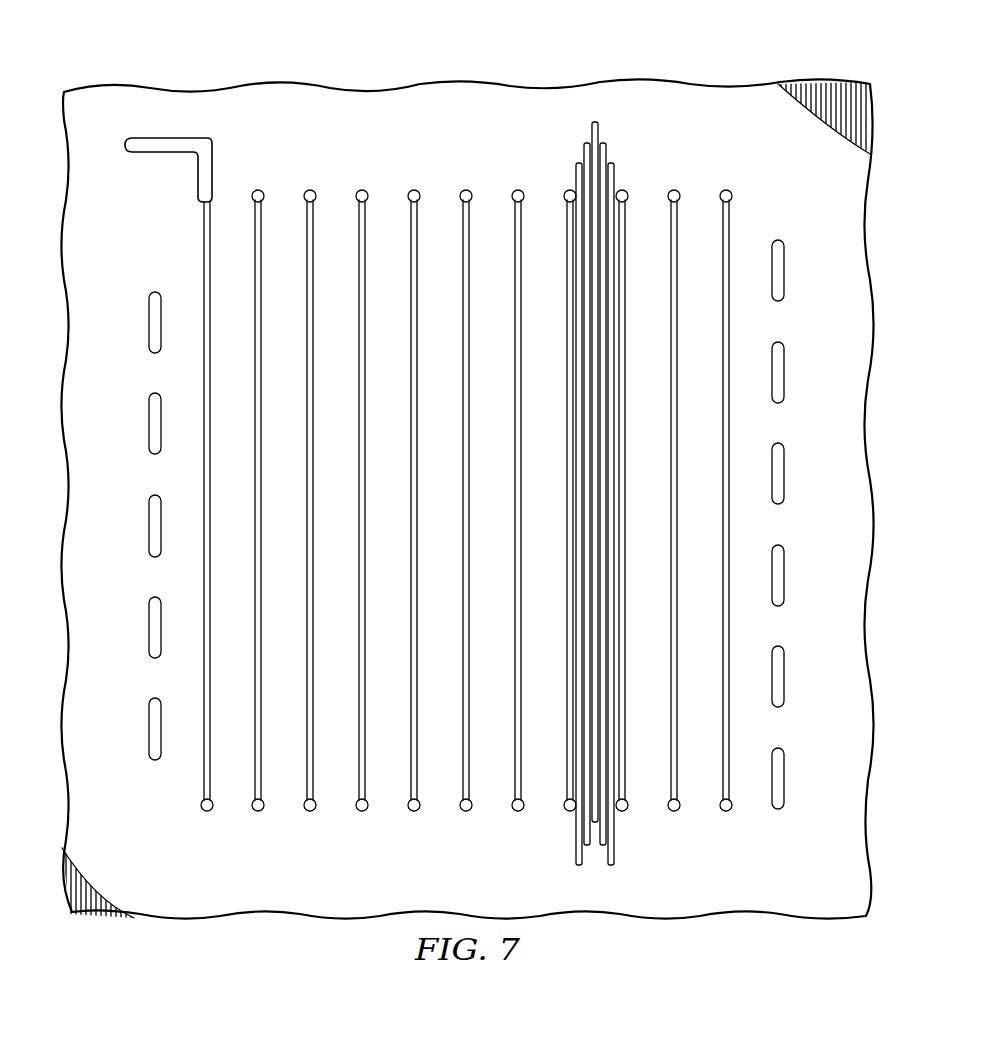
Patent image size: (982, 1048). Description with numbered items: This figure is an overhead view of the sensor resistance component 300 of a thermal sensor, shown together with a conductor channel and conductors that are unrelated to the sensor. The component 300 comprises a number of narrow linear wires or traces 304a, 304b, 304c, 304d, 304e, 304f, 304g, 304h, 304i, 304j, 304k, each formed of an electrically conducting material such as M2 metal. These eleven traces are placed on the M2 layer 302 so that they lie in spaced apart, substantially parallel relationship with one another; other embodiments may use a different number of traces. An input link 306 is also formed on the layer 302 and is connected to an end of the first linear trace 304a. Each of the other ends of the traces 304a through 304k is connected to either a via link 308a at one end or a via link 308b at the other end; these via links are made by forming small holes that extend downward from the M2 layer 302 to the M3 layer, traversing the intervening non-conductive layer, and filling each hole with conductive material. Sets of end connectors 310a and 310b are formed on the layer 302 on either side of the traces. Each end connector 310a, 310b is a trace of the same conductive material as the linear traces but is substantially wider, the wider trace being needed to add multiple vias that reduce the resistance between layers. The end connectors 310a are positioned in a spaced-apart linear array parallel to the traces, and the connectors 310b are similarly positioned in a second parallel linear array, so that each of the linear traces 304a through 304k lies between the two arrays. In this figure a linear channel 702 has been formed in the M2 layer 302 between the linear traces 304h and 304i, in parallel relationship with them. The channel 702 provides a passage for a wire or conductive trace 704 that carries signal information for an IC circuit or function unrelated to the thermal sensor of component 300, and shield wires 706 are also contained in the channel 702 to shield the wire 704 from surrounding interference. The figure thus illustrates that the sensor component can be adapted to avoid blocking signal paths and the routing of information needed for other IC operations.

The resistor component 300 is at (219, 68).
The layer 302 is at (420, 82).
The input link 306 is at (186, 137).
The linear trace 304a is at (203, 245).
The linear trace 304b is at (272, 811).
The linear trace 304c is at (314, 205).
The linear trace 304d is at (376, 811).
The linear trace 304e is at (418, 205).
The linear trace 304f is at (480, 811).
The linear trace 304g is at (522, 205).
The linear trace 304h is at (566, 811).
The linear trace 304i is at (626, 207).
The linear trace 304j is at (678, 811).
The linear trace 304k is at (731, 222).
The via link 308a is at (259, 190).
The via link 308b is at (205, 812).
The end connector 310a is at (149, 326).
The end connector 310b is at (785, 270).
The linear channel 702 is at (577, 164).
The conductive trace 704 is at (596, 121).
The shield wire 706 is at (586, 142).